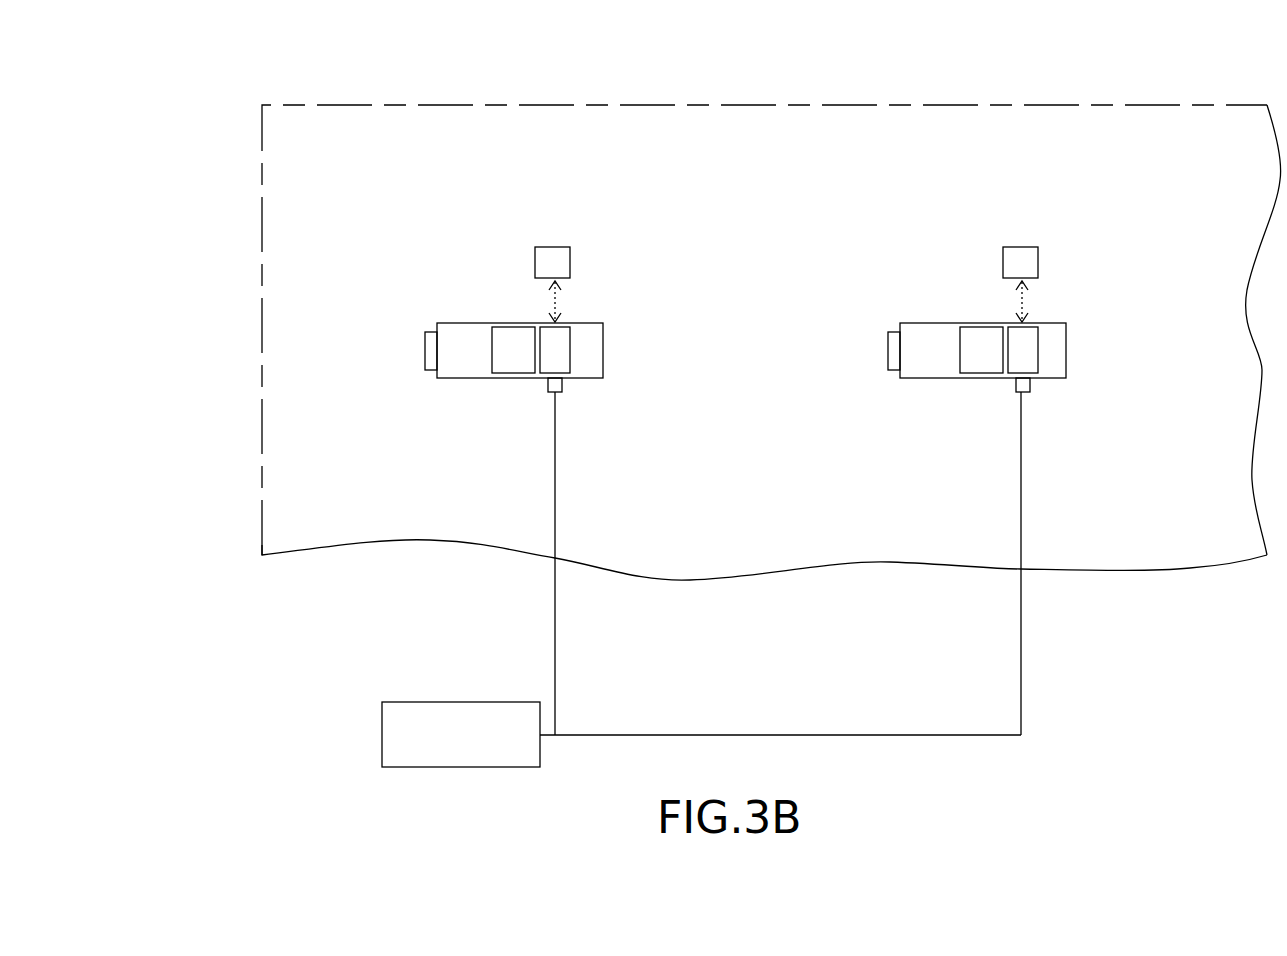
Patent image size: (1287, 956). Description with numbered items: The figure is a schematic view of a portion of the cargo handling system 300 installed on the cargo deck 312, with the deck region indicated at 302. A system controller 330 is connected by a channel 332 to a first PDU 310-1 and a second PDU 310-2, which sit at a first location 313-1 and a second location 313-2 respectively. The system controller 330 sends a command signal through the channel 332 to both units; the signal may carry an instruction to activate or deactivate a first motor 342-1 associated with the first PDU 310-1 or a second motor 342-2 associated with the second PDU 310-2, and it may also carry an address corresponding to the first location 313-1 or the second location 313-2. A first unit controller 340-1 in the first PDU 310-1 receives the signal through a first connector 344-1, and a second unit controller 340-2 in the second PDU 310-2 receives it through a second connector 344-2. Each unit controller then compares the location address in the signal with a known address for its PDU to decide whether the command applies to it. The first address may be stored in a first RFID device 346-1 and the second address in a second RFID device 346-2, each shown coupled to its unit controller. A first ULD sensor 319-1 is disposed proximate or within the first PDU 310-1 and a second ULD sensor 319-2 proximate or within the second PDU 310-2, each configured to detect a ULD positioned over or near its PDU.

The cargo handling system 300 is at (167, 136).
The substrate / housing region 302 is at (262, 375).
The cargo deck 312 is at (1215, 133).
The first PDU 310-1 is at (465, 322).
The second PDU 310-2 is at (929, 322).
The first location 313-1 is at (548, 319).
The second location 313-2 is at (1000, 324).
The first ULD sensor 319-1 is at (425, 348).
The second ULD sensor 319-2 is at (888, 348).
The first unit controller 340-1 is at (571, 356).
The second unit controller 340-2 is at (1039, 356).
The first motor 342-1 is at (490, 358).
The second motor 342-2 is at (958, 358).
The first connector 344-1 is at (552, 390).
The second connector 344-2 is at (1018, 390).
The first RFID device 346-1 is at (553, 247).
The second RFID device 346-2 is at (1023, 247).
The system controller 330 is at (382, 728).
The channel 332 is at (1021, 672).